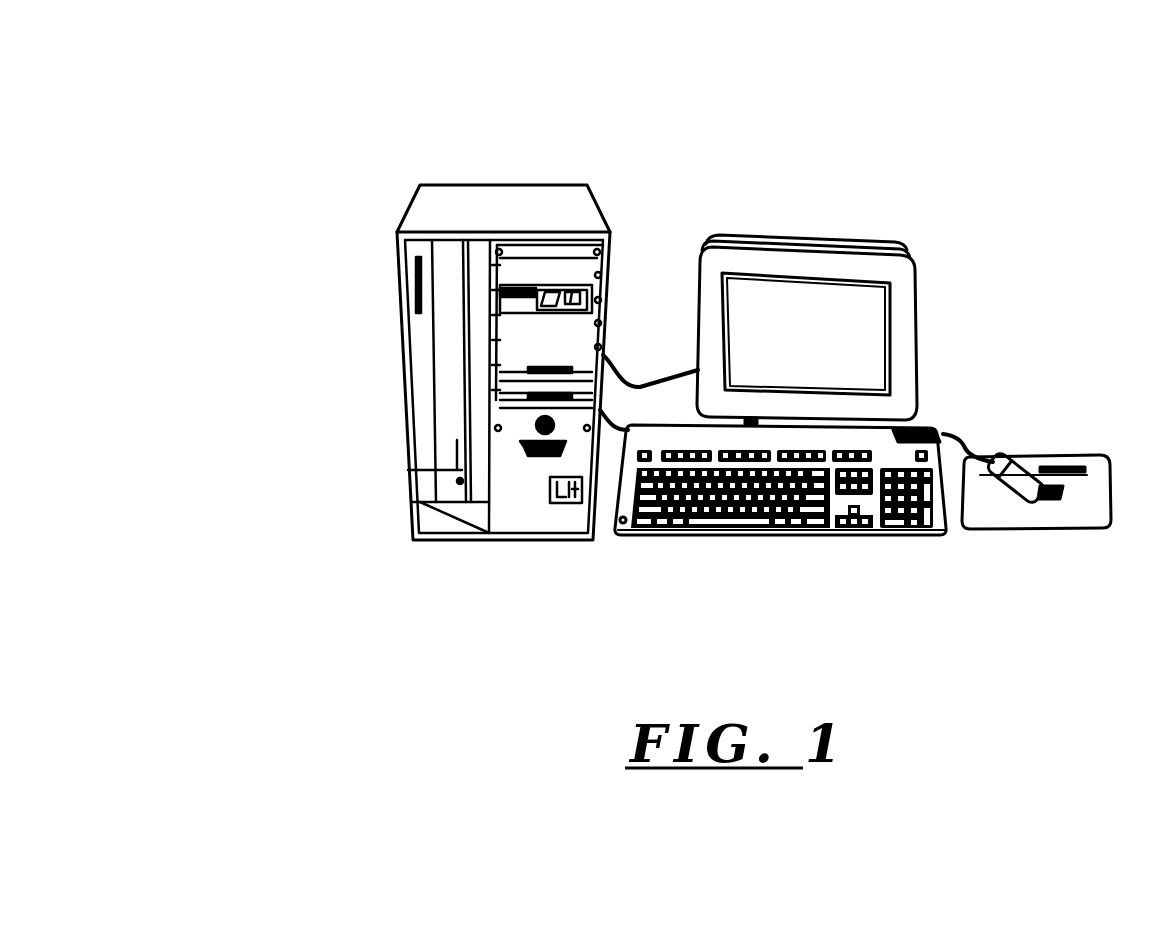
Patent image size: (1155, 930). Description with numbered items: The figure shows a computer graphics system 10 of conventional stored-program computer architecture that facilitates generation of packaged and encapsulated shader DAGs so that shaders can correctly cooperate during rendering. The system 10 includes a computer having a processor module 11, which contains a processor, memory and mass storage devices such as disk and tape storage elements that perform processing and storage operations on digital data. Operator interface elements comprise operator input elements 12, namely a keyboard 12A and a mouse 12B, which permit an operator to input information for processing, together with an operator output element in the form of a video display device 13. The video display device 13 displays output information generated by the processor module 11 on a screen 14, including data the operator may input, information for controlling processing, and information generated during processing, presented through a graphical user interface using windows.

The computer graphics system 10 is at (337, 112).
The processor module 11 is at (513, 185).
The operator input element 12 is at (942, 582).
The keyboard 12A is at (818, 542).
The mouse 12B is at (1093, 537).
The video display device 13 is at (923, 337).
The screen 14 is at (405, 383).